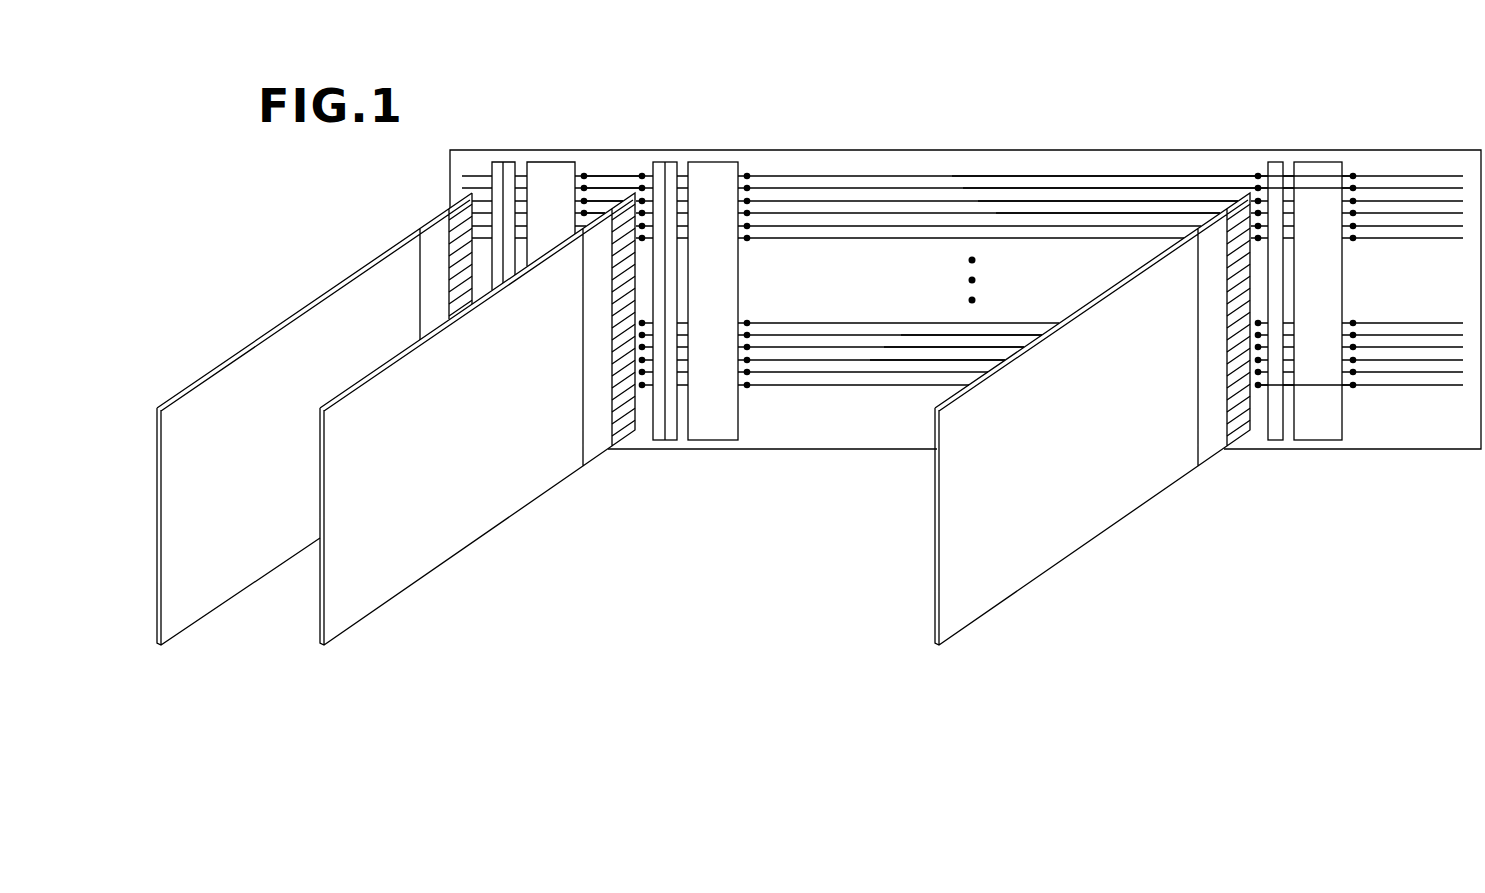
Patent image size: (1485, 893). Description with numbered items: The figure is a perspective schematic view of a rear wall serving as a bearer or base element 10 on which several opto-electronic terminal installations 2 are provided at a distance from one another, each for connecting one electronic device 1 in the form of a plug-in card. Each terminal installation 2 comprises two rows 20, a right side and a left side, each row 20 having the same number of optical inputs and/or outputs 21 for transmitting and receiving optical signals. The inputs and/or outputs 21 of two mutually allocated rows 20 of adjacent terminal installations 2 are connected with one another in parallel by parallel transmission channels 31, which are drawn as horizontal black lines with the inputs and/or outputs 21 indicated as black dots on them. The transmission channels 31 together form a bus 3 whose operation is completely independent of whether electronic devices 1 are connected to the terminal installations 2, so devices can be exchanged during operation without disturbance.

The electronic device 1 is at (242, 601).
The opto-electronic terminal installation 2 is at (546, 150).
The bus 3 is at (1064, 172).
The base element 10 is at (928, 145).
The row 20 is at (584, 150).
The optical input and/or output 21 is at (641, 184).
The transmission channel 31 is at (996, 213).